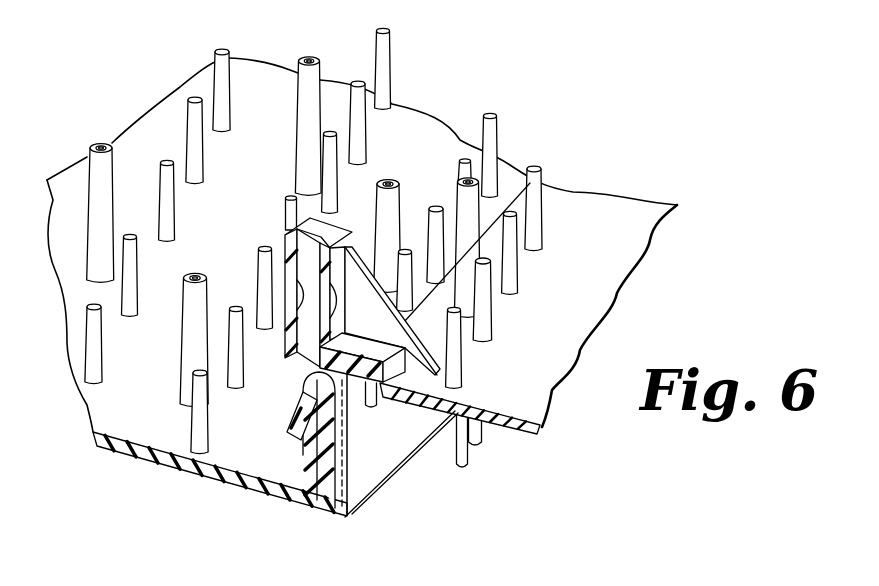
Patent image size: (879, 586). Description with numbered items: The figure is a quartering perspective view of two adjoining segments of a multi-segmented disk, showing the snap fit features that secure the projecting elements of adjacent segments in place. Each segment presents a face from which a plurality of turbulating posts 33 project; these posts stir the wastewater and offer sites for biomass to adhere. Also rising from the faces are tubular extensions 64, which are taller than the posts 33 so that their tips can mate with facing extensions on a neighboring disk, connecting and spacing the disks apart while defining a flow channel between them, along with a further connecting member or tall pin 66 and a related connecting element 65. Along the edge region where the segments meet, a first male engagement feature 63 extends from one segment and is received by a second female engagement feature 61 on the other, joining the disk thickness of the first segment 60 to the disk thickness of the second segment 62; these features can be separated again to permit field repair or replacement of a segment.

The turbulating posts 33 is at (215, 78).
The disk thickness of first segment 60 is at (507, 430).
The snap fit second (female) engagement feature 61 is at (342, 217).
The disk thickness of second segment 62 is at (368, 490).
The snap fit first (male) engagement feature 63 is at (277, 483).
The tubular extension (connecting member, tall pin) 64 is at (184, 278).
The standoff 65 is at (183, 340).
The connecting member (tall pin) 66 is at (192, 400).